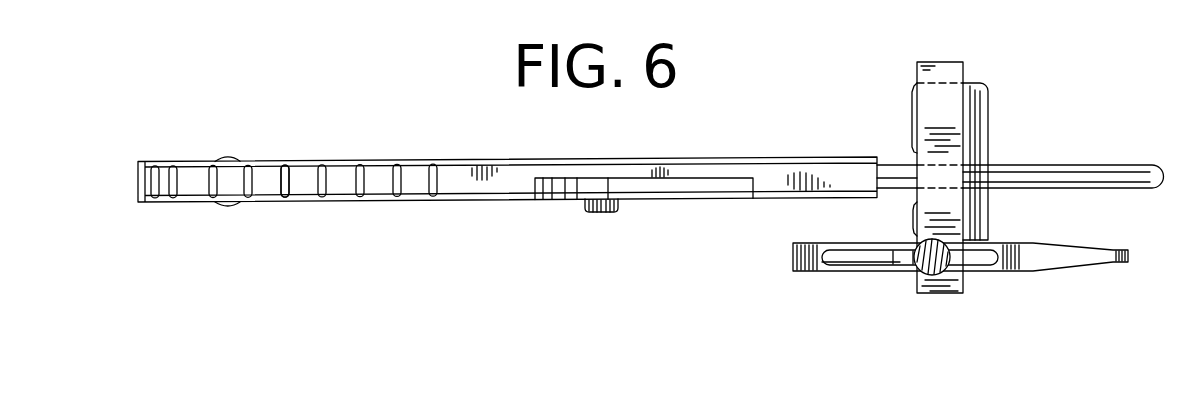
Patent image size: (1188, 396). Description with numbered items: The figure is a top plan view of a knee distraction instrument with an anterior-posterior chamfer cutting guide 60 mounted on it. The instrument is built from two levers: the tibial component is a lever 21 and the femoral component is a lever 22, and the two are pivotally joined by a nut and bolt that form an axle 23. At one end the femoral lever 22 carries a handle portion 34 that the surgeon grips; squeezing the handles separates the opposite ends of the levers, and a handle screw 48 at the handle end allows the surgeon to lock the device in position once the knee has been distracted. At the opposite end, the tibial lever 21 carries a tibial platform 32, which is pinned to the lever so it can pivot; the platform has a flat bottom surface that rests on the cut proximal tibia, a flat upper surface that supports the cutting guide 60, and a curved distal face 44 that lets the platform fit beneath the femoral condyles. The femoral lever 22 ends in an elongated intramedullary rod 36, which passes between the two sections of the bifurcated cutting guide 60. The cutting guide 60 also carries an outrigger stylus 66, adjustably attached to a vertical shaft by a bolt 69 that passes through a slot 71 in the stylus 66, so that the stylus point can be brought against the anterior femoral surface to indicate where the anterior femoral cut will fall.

The tibial lever 21 is at (683, 207).
The femoral lever 22 is at (460, 153).
The axle 23 is at (602, 213).
The tibial platform 32 is at (904, 132).
The handle portion 34 is at (312, 177).
The intramedullary rod 36 is at (1072, 168).
The curved distal face 44 is at (980, 207).
The handle screw 48 is at (228, 207).
The cutting guide 60 is at (966, 57).
The outrigger stylus 66 is at (1050, 257).
The bolt 69 is at (918, 261).
The slot 71 is at (842, 252).